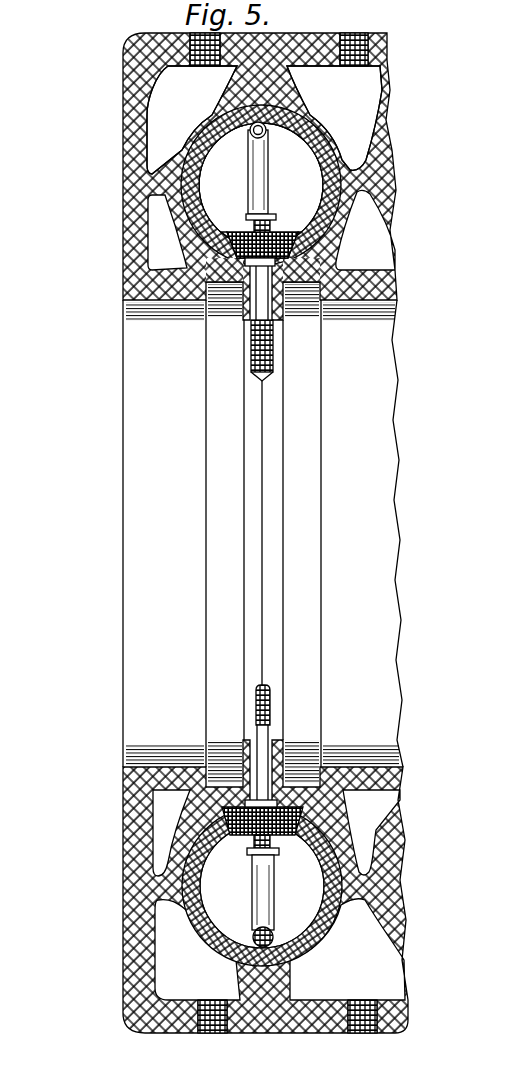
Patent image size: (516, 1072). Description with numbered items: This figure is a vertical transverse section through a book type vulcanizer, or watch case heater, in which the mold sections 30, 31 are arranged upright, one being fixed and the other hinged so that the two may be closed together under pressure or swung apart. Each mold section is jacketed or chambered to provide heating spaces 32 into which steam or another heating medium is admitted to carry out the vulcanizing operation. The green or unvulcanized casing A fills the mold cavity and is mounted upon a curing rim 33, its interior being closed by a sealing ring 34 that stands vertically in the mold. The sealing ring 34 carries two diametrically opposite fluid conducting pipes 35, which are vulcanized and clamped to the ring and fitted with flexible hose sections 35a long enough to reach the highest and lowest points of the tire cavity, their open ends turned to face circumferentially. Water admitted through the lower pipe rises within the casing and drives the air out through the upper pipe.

The mold section 30 is at (123, 75).
The mold section 31 is at (388, 74).
The heating spaces 32 is at (264, 120).
The curing rim 33 is at (232, 284).
The sealing ring 34 is at (273, 238).
The fluid conducting pipes 35 is at (262, 370).
The flexible hose sections 35a is at (289, 885).
The green casing A is at (318, 168).